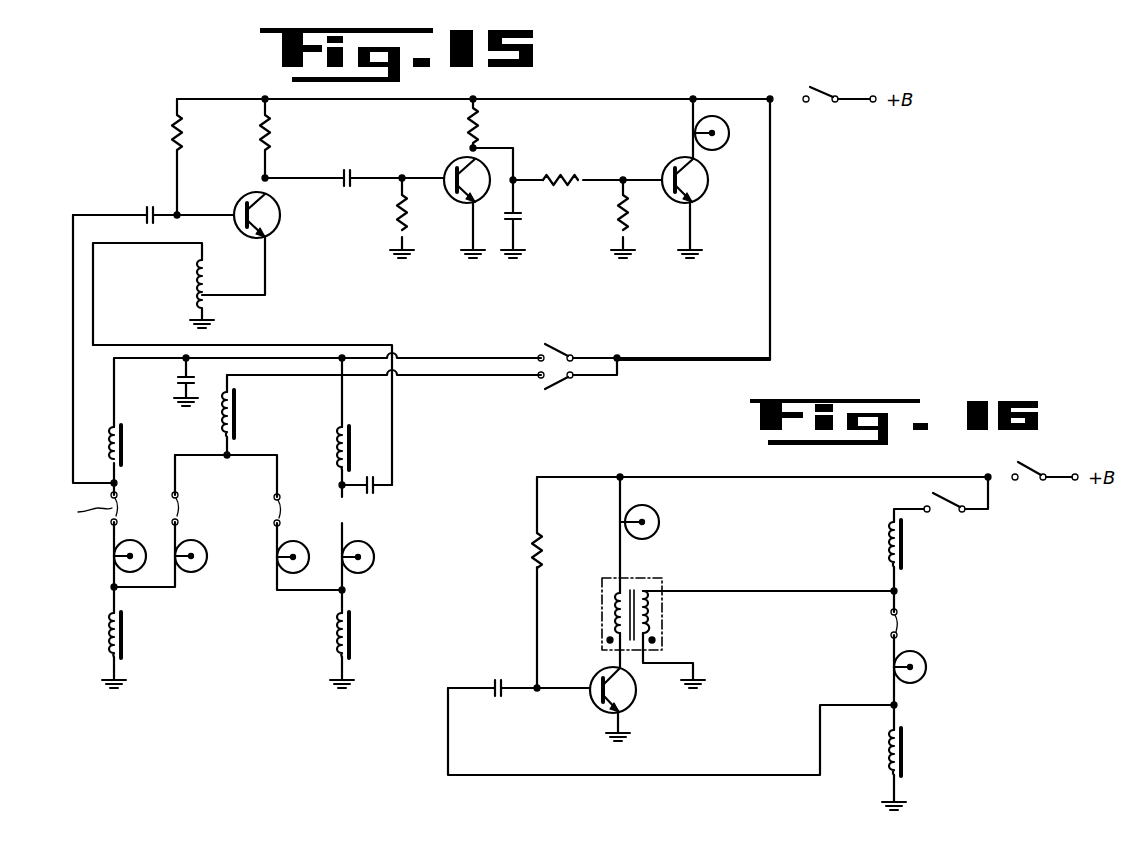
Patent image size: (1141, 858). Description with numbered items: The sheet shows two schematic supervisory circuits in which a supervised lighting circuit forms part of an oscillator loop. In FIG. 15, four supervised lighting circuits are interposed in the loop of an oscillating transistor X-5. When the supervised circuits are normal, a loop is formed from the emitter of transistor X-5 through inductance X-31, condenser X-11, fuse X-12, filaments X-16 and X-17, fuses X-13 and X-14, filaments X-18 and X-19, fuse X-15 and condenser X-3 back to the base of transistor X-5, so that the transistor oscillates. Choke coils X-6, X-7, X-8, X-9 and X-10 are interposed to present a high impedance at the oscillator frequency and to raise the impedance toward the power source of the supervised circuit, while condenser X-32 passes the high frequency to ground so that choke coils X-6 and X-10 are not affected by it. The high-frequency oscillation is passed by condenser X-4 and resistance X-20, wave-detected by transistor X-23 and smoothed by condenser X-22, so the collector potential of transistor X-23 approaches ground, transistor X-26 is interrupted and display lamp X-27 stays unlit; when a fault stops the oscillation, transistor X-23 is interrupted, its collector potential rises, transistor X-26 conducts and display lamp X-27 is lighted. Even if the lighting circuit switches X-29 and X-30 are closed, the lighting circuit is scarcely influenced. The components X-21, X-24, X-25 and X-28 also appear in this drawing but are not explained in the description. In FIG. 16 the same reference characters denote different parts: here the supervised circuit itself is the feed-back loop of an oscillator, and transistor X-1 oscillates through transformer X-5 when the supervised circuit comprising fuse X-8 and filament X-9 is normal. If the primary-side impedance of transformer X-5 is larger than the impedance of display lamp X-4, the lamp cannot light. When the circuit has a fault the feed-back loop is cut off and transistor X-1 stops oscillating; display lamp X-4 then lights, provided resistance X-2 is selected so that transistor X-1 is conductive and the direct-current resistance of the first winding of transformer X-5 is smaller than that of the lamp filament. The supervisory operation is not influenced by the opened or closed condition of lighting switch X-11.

In FIG. 15, the transistor X-1 is at (270, 128).
In FIG. 16, the transistor X-1 is at (630, 705).
In FIG. 15, the resistance X-2 is at (180, 137).
In FIG. 16, the resistance X-2 is at (530, 548).
In FIG. 15, the condenser X-3 is at (148, 205).
In FIG. 16, the condenser X-3 is at (499, 678).
In FIG. 15, the condenser; display lamp X-4 is at (347, 169).
In FIG. 16, the condenser; display lamp X-4 is at (660, 522).
In FIG. 15, the transistor; transformer X-5 is at (280, 228).
In FIG. 16, the transistor; transformer X-5 is at (650, 580).
In FIG. 15, the choke coil X-6 is at (335, 440).
In FIG. 16, the choke coil X-6 is at (886, 548).
In FIG. 15, the choke coil X-7 is at (352, 638).
In FIG. 16, the choke coil X-7 is at (904, 752).
In FIG. 15, the choke coil; fuse X-8 is at (238, 410).
In FIG. 16, the choke coil; fuse X-8 is at (900, 625).
In FIG. 15, the choke coil; filament X-9 is at (124, 632).
In FIG. 16, the choke coil; filament X-9 is at (926, 667).
In FIG. 15, the choke coil X-10 is at (125, 440).
In FIG. 16, the choke coil X-10 is at (1030, 482).
In FIG. 15, the condenser; lighting switch X-11 is at (376, 495).
In FIG. 16, the condenser; lighting switch X-11 is at (948, 512).
In FIG. 15, the fuse X-12 is at (338, 512).
In FIG. 15, the fuse X-13 is at (272, 510).
In FIG. 15, the fuse X-14 is at (134, 508).
In FIG. 15, the fuse X-15 is at (70, 507).
In FIG. 15, the filament X-16 is at (375, 556).
In FIG. 15, the filament X-17 is at (297, 574).
In FIG. 15, the filament X-18 is at (208, 566).
In FIG. 15, the filament X-19 is at (113, 555).
In FIG. 15, the resistance X-20 is at (400, 212).
In FIG. 15, the resistor X-21 is at (478, 125).
In FIG. 15, the condenser X-22 is at (520, 218).
In FIG. 15, the transistor X-23 is at (490, 195).
In FIG. 15, the resistor X-24 is at (563, 175).
In FIG. 15, the resistor X-25 is at (627, 222).
In FIG. 15, the transistor X-26 is at (700, 205).
In FIG. 15, the display lamp X-27 is at (722, 150).
In FIG. 15, the switch X-28 is at (825, 105).
In FIG. 15, the lighting circuit switch X-29 is at (554, 340).
In FIG. 15, the lighting circuit switch X-30 is at (548, 390).
In FIG. 15, the inductance X-31 is at (194, 275).
In FIG. 15, the condenser X-32 is at (180, 384).